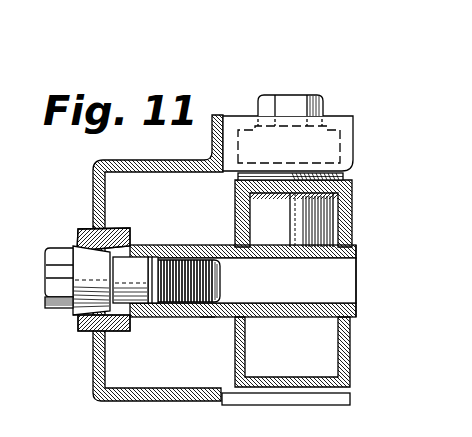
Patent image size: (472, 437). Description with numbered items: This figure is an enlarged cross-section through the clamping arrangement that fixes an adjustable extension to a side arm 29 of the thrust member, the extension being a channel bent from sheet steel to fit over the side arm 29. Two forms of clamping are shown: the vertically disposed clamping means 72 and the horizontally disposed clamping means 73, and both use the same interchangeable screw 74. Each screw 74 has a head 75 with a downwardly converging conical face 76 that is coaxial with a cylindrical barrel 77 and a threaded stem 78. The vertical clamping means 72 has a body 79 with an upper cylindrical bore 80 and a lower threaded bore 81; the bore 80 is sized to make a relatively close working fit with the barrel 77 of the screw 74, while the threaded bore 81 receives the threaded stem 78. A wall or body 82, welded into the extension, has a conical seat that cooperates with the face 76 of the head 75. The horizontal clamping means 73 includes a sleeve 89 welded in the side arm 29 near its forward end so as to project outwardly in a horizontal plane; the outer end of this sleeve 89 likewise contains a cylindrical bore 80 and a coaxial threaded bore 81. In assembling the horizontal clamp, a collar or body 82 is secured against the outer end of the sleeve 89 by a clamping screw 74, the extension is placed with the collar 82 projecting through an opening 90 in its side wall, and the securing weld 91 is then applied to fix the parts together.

The side arm 29 is at (349, 233).
The clamping means 72 is at (333, 108).
The clamping means 73 is at (71, 319).
The screw 74 is at (40, 303).
The head 75 is at (62, 277).
The conical face 76 is at (92, 262).
The cylindrical barrel 77 is at (135, 304).
The threaded stem 78 is at (213, 279).
The body 79 is at (320, 215).
The cylindrical bore 80 is at (162, 316).
The threaded bore 81 is at (188, 258).
The collar or body 82 is at (120, 229).
The sleeve 89 is at (207, 317).
The opening 90 is at (82, 332).
The securing weld 91 is at (93, 226).